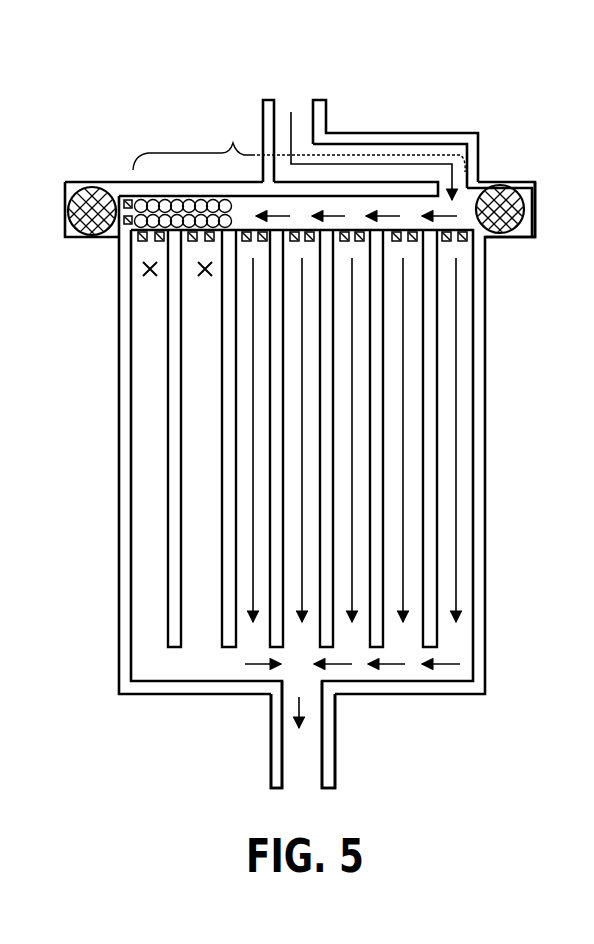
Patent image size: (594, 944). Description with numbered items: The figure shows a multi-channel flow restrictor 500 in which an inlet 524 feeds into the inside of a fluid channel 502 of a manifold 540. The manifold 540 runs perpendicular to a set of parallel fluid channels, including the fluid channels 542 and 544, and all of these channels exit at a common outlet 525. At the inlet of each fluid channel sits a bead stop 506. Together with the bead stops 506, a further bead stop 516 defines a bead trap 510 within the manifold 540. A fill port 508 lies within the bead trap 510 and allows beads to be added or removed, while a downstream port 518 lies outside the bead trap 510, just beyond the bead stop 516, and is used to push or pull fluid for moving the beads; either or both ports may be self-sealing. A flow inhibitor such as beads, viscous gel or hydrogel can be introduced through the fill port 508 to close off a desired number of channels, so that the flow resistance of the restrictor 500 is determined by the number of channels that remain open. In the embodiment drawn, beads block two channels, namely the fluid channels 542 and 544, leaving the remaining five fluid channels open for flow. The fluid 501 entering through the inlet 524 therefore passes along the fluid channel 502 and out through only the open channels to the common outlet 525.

The multi-channel flow restrictor 500 is at (100, 70).
The fluid 501 is at (430, 115).
The fluid channel 502 is at (356, 205).
The bead stop 506 is at (296, 242).
The fill port 508 is at (502, 192).
The bead trap 510 is at (299, 171).
The bead stop 516 is at (128, 202).
The downstream port 518 is at (94, 200).
The inlet 524 is at (295, 103).
The common outlet 525 is at (305, 773).
The manifold 540 is at (537, 238).
The fluid channel 542 is at (193, 420).
The fluid channel 544 is at (248, 497).